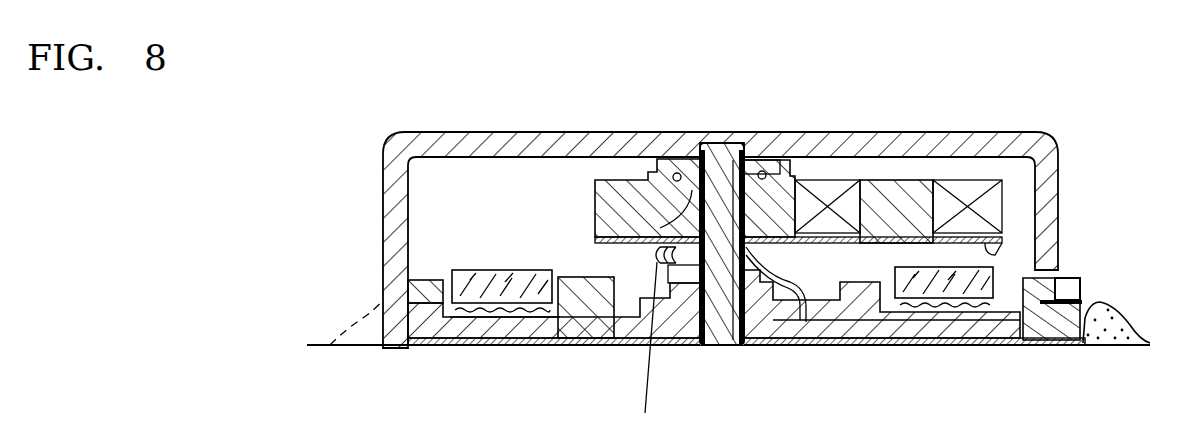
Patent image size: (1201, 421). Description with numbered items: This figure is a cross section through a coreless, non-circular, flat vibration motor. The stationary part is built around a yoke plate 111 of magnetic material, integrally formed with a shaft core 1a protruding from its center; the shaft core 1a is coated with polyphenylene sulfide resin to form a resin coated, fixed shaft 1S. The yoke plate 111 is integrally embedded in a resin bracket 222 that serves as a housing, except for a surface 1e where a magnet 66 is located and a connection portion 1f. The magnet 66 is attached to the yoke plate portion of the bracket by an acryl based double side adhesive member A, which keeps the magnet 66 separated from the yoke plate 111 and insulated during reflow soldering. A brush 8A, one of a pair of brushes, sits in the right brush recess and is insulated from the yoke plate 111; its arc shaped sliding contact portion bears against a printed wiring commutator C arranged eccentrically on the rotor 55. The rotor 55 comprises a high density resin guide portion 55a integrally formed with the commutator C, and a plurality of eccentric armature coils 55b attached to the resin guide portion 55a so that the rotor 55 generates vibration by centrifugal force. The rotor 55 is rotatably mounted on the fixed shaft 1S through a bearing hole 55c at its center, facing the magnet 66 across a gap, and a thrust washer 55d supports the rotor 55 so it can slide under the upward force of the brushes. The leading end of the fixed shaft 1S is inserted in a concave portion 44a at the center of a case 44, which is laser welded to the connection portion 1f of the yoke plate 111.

The bearing hole 55c is at (635, 190).
The concave portion 44a is at (718, 153).
The resin coated, fixed shaft 1S is at (748, 145).
The thrust washer 55d is at (780, 162).
The resin guide portion 55a is at (888, 207).
The rotor 55 is at (936, 166).
The eccentric armature coils 55b is at (990, 207).
The case 44 is at (1045, 207).
The resin bracket 222 is at (412, 285).
The connection portion 1f is at (388, 348).
The yoke plate 111 is at (452, 340).
The magnet 66 is at (498, 290).
The surface 1e is at (530, 320).
The shaft core 1a is at (723, 274).
The printed wiring commutator C is at (803, 250).
The brush 8A is at (915, 345).
The acryl based double side adhesive member A is at (960, 300).